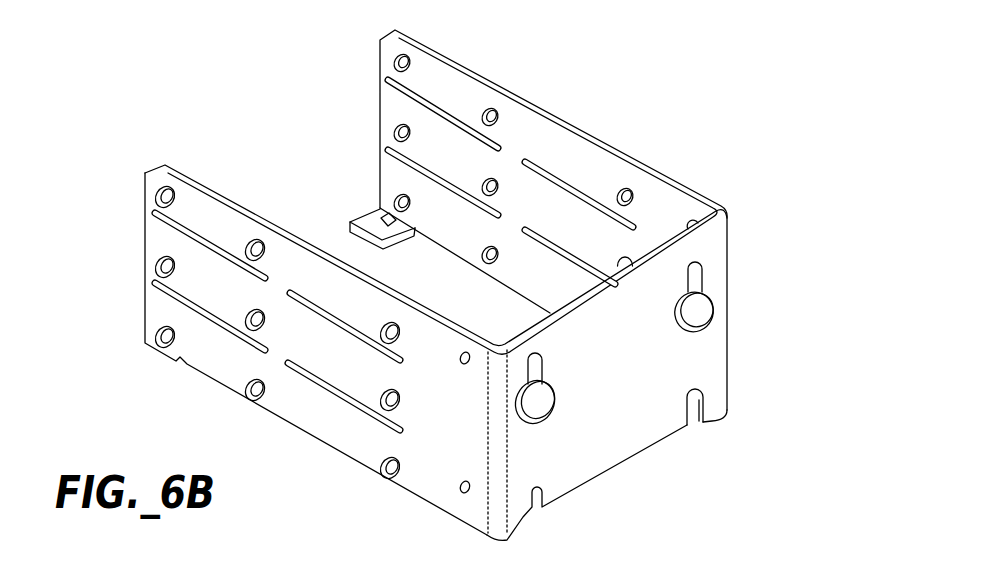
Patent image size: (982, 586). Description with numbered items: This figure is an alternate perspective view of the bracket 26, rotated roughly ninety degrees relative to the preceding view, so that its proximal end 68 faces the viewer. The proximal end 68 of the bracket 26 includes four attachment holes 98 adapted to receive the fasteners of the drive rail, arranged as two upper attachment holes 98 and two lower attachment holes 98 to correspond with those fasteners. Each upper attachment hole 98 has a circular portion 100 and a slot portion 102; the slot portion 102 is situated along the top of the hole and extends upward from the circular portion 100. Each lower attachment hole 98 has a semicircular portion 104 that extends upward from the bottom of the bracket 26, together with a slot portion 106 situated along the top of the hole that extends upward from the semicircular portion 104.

The bracket 26 is at (493, 285).
The proximal end 68 is at (597, 463).
The attachment holes 98 is at (755, 356).
The circular portion 100 is at (713, 306).
The slot portion 102 is at (699, 271).
The semicircular portion 104 is at (706, 424).
The slot portion 106 is at (700, 397).